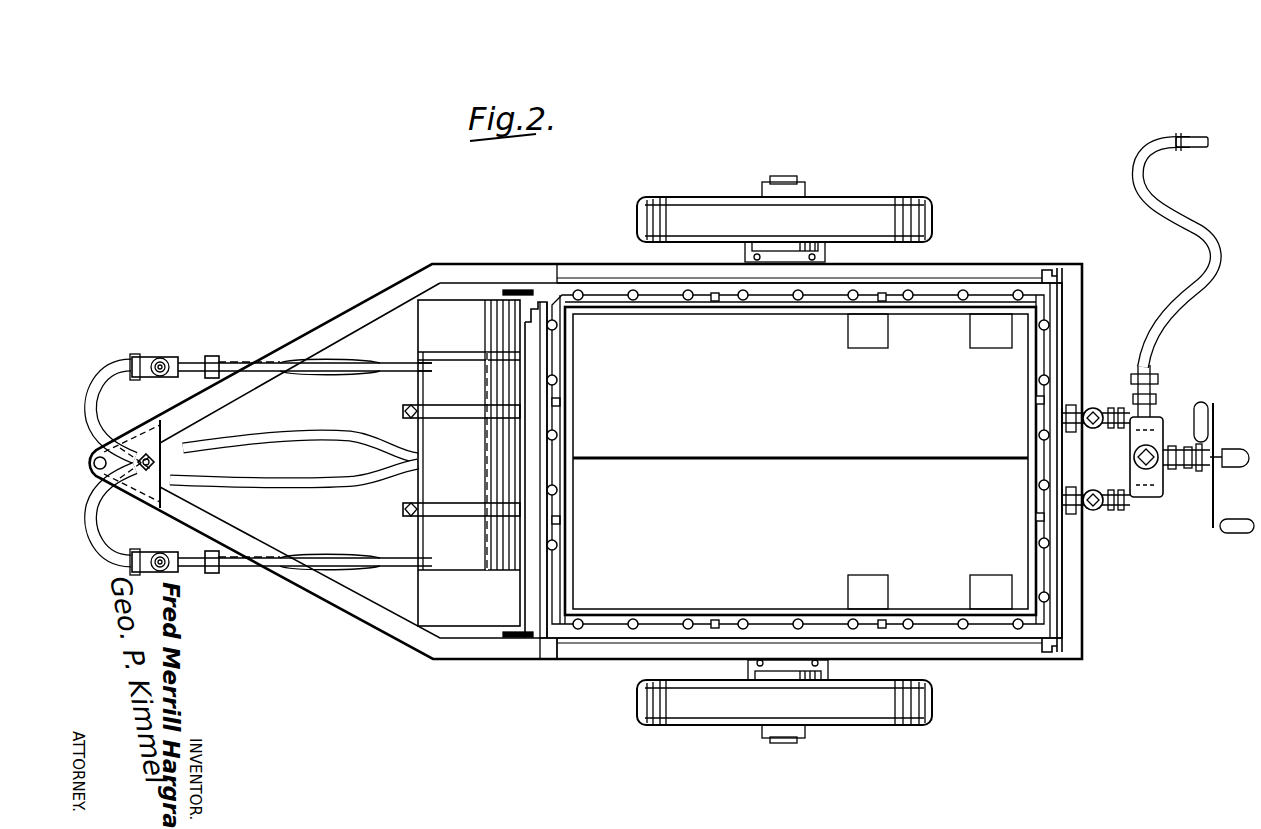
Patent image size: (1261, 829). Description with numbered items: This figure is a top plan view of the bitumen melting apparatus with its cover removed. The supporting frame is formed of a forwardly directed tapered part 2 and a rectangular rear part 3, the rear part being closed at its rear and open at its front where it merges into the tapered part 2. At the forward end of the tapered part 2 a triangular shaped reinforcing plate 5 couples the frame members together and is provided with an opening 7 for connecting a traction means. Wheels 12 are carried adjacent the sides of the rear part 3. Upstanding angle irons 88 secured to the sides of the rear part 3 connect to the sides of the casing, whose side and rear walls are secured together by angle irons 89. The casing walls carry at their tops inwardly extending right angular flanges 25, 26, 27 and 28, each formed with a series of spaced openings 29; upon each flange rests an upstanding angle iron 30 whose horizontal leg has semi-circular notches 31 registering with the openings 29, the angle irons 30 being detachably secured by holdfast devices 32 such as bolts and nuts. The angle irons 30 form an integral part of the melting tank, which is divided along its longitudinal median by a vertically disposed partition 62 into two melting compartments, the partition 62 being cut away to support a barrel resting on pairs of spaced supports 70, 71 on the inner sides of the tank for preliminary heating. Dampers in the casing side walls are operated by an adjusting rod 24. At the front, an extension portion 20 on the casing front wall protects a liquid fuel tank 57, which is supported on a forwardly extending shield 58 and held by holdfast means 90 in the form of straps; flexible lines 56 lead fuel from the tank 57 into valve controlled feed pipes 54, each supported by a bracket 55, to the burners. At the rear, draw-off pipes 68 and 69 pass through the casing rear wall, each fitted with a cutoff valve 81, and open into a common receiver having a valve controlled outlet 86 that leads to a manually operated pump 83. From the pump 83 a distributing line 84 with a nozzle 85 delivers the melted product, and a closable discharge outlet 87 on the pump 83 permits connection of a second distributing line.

The forwardly directed tapered part 2 is at (322, 598).
The rectangular rear part 3 is at (543, 652).
The triangular shaped reinforcing plate 5 is at (148, 432).
The opening 7 is at (96, 460).
The wheels 12 is at (853, 215).
The extension portion 20 is at (530, 430).
The adjusting rod 24 is at (513, 290).
The flange 25 is at (798, 425).
The flange 26 is at (704, 620).
The flange 27 is at (1052, 370).
The flange 28 is at (550, 458).
The openings 29 is at (835, 304).
The angle iron 30 is at (988, 305).
The semi-circular notches 31 is at (634, 302).
The holdfast devices 32 is at (714, 304).
The feed pipe 54 is at (186, 362).
The bracket 55 is at (230, 363).
The flexible line 56 is at (272, 440).
The tank 57 is at (434, 378).
The shield 58 is at (440, 318).
The partition 62 is at (752, 456).
The draw-off pipe 68 is at (1066, 410).
The draw-off pipe 69 is at (1066, 505).
The support 70 is at (876, 334).
The support 71 is at (992, 336).
The cutoff valve 81 is at (1098, 410).
The manually operated pump 83 is at (1152, 482).
The distributing line 84 is at (1188, 228).
The nozzle 85 is at (1187, 136).
The valve controlled outlet 86 is at (1208, 420).
The closable discharge outlet 87 is at (1152, 443).
The upstanding angle irons 88 is at (925, 272).
The angle irons 89 is at (1045, 270).
The holdfast means 90 is at (456, 516).